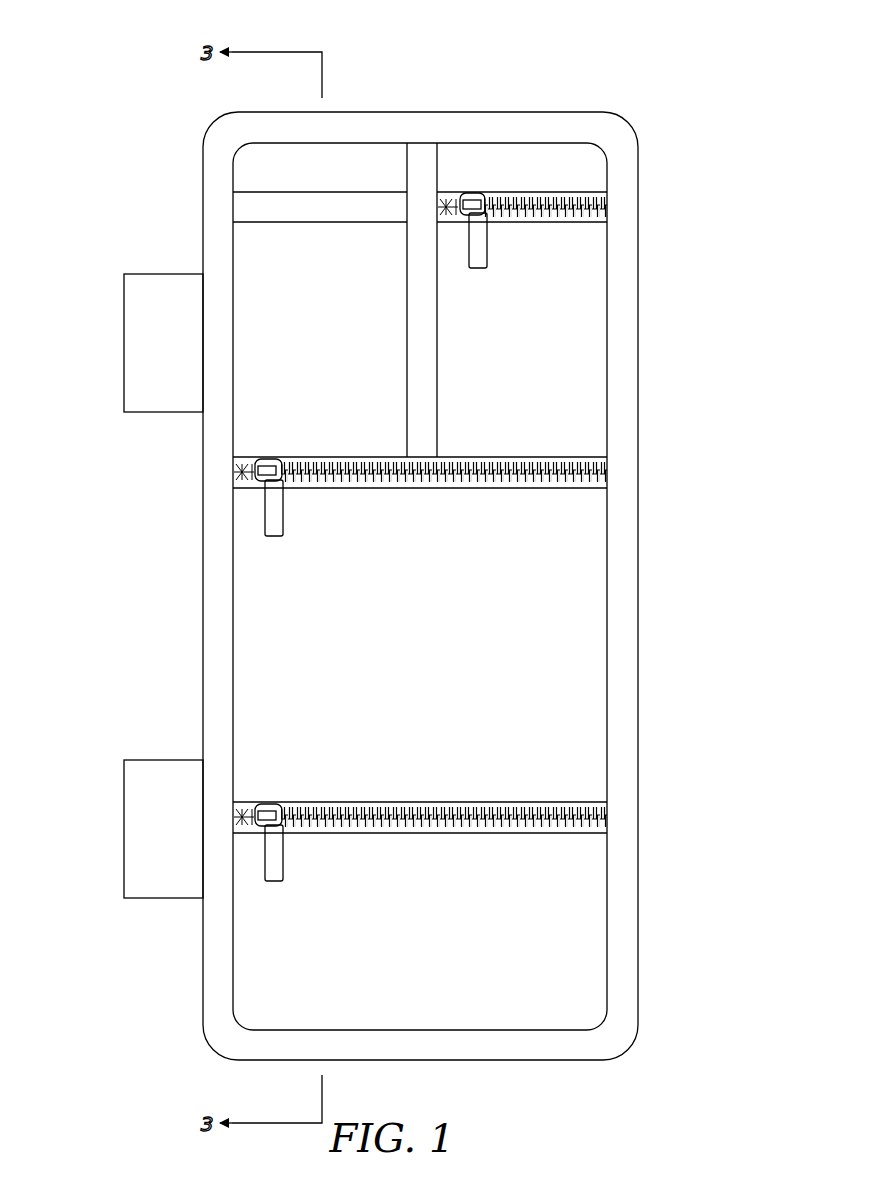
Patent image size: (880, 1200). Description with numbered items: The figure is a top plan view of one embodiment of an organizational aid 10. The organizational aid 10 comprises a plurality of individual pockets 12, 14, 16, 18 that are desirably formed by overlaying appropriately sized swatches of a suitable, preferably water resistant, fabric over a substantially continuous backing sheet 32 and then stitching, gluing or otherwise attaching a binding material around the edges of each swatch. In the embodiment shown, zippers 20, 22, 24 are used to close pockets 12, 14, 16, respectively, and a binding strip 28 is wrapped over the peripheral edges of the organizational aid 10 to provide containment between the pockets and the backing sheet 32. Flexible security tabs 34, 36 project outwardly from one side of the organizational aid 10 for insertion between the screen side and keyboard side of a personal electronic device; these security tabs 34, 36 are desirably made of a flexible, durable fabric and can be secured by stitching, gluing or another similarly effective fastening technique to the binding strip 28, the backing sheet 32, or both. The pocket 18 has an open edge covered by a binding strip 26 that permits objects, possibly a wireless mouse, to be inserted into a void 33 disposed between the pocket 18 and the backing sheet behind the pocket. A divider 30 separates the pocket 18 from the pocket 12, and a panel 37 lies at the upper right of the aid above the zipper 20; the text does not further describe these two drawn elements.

The organizational aid 10 is at (604, 68).
The pocket 12 is at (595, 326).
The pocket 14 is at (574, 680).
The pocket 16 is at (588, 928).
The pocket 18 is at (250, 260).
The zipper 20 is at (592, 200).
The zipper 22 is at (587, 472).
The zipper 24 is at (588, 803).
The binding strip 26 is at (270, 202).
The binding strip 28 is at (487, 125).
The vertical divider 30 is at (422, 343).
The backing sheet 32 is at (373, 157).
The void 33 is at (328, 260).
The flexible security tab 34 is at (140, 337).
The flexible security tab 36 is at (143, 845).
The upper right panel 37 is at (582, 167).